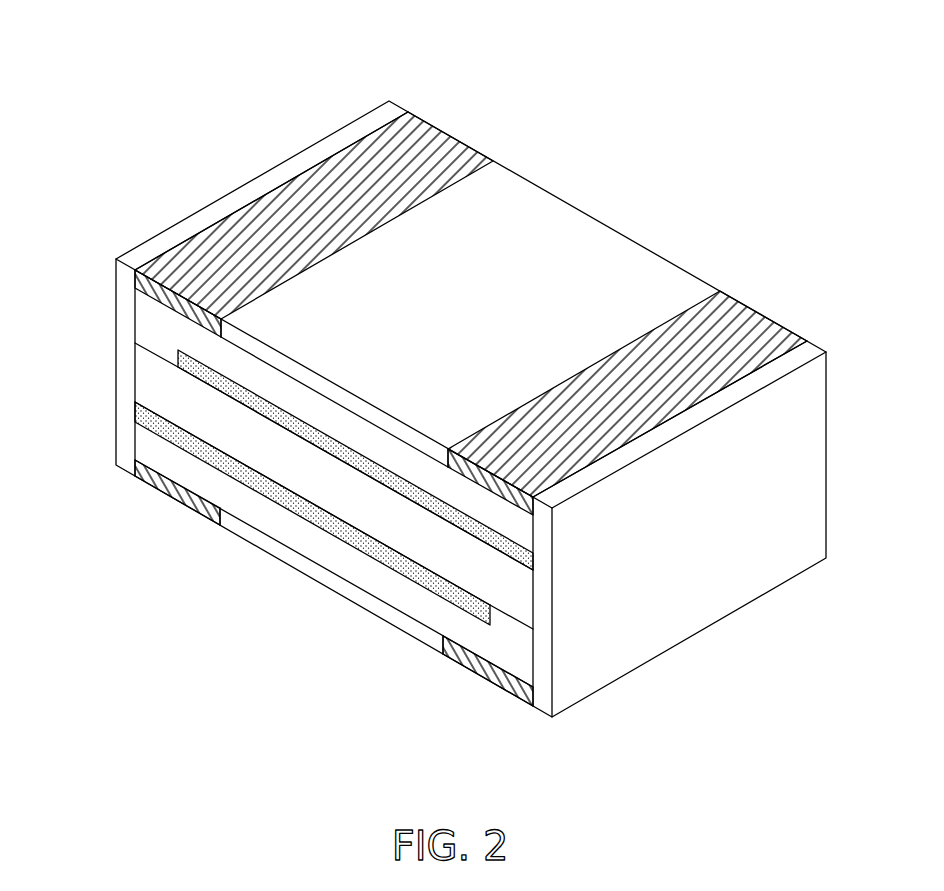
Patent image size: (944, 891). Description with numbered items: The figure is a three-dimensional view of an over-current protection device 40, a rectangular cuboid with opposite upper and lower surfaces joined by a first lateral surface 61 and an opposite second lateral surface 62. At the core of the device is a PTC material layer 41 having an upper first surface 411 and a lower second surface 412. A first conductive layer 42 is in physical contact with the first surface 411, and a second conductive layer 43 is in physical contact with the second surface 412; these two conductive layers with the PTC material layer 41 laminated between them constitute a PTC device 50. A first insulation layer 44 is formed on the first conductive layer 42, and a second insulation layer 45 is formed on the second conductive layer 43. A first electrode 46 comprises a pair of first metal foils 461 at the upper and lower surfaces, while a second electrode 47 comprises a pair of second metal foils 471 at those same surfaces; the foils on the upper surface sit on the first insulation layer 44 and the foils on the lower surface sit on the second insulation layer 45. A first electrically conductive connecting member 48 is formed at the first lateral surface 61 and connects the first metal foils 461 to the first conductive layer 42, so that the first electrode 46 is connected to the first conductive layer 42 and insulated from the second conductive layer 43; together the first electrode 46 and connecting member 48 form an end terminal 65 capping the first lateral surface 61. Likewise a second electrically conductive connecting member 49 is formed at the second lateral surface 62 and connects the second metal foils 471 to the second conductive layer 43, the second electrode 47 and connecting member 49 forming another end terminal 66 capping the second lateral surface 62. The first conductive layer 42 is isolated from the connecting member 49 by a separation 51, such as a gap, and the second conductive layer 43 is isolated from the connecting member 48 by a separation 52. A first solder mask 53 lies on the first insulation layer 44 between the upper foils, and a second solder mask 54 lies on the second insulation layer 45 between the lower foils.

The over-current protection device 40 is at (453, 386).
The PTC material layer 41 is at (153, 387).
The first conductive layer 42 is at (153, 350).
The second conductive layer 43 is at (152, 422).
The first insulation layer 44 is at (150, 315).
The second insulation layer 45 is at (153, 458).
The first electrode 46 is at (758, 318).
The second electrode 47 is at (440, 137).
The first electrically conductive connecting member 48 is at (803, 357).
The second electrically conductive connecting member 49 is at (393, 103).
The PTC device 50 is at (398, 479).
The separation 51 is at (177, 357).
The separation 52 is at (518, 627).
The first solder mask 53 is at (597, 233).
The second solder mask 54 is at (313, 580).
The first lateral surface 61 is at (805, 457).
The second lateral surface 62 is at (237, 186).
The end terminal 65 is at (810, 276).
The end terminal 66 is at (446, 62).
The first surface 411 is at (330, 458).
The second surface 412 is at (393, 562).
The first metal foils 461 is at (555, 513).
The second metal foils 471 is at (153, 297).